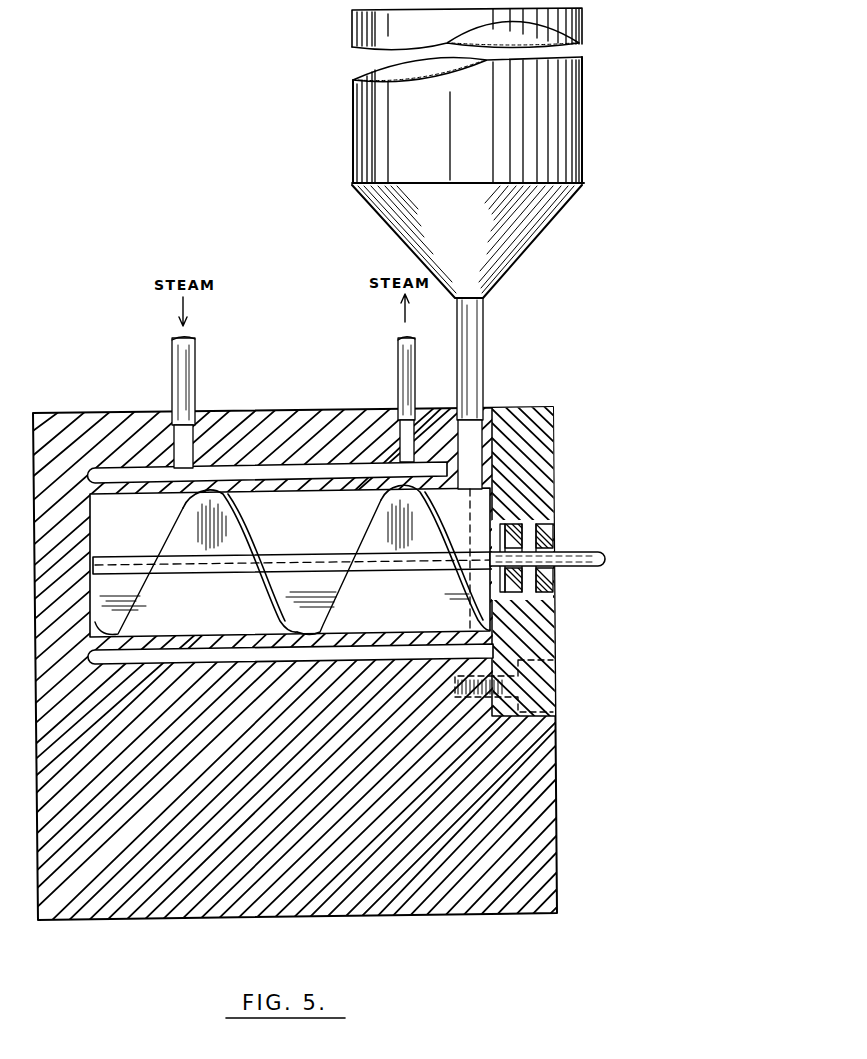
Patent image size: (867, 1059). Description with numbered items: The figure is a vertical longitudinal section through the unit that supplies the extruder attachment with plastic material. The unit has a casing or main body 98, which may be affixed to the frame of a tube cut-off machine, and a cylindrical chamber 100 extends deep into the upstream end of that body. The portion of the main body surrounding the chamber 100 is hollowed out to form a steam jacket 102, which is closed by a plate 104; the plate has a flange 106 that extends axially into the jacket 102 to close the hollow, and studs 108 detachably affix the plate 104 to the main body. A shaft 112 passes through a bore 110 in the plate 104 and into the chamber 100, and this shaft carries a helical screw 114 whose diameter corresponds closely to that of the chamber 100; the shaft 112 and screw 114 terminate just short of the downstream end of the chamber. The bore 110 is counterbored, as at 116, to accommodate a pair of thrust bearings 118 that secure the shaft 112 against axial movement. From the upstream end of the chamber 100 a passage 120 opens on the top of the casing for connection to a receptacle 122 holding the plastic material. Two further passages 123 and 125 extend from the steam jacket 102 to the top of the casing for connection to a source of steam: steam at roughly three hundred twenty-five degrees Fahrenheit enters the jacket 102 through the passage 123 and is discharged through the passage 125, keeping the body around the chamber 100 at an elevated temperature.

The main body 98 is at (306, 797).
The cylindrical chamber 100 is at (318, 490).
The steam jacket 102 is at (322, 471).
The plate 104 is at (547, 436).
The flange 106 is at (460, 657).
The studs 108 is at (556, 700).
The bore 110 is at (497, 576).
The shaft 112 is at (583, 548).
The helical screw 114 is at (278, 602).
The counterbore 116 is at (533, 518).
The thrust bearings 118 is at (528, 588).
The passage 120 is at (478, 436).
The receptacle 122 is at (488, 134).
The passage 123 is at (198, 426).
The passage 125 is at (395, 430).